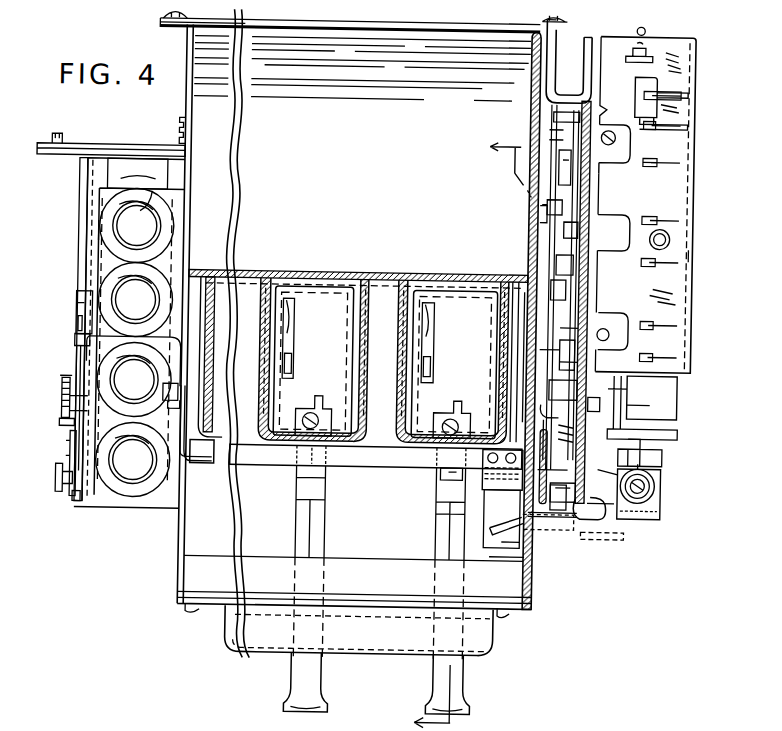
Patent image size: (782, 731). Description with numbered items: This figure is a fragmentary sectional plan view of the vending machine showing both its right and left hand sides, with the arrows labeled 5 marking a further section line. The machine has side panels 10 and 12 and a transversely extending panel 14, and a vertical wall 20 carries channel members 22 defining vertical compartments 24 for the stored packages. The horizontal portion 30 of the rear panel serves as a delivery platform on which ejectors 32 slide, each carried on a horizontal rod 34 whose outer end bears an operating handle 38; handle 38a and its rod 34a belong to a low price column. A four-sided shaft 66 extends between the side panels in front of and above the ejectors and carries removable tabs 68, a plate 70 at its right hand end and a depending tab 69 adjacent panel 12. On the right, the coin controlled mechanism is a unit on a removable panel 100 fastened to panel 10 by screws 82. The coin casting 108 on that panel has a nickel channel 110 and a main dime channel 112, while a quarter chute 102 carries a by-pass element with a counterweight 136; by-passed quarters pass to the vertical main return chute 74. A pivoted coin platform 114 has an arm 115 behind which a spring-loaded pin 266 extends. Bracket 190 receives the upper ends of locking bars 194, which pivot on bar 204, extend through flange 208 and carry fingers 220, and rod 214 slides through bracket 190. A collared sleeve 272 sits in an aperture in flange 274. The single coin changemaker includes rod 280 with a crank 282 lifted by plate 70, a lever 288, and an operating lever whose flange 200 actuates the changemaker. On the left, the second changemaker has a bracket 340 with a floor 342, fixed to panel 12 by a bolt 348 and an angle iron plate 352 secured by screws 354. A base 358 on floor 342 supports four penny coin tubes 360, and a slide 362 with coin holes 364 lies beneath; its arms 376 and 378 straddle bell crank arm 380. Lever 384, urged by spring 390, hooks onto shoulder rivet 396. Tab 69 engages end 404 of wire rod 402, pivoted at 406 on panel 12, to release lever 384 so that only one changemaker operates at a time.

The section line 5- 5 is at (457, 722).
The side panel 10 is at (525, 93).
The side panel 12 is at (209, 121).
The transversely extending panel 14 is at (355, 31).
The vertical wall 20 is at (409, 274).
The channel members 22 is at (367, 312).
The vertical compartments 24 is at (311, 312).
The horizontal portion 30 is at (519, 303).
The ejectors 32 is at (327, 311).
The horizontal rod 34 is at (443, 530).
The rod 34a is at (300, 532).
The operating handle 38 is at (468, 685).
The operating handle 38a is at (298, 676).
The four-sided shaft 66 is at (358, 457).
The removable tabs 68 is at (443, 477).
The depending tab 69 is at (202, 451).
The plate 70 is at (516, 531).
The main return chute 74 is at (551, 88).
The screws 82 is at (544, 17).
The removable panel 100 is at (563, 318).
The quarter coin chute 102 is at (579, 188).
The coin casting 108 is at (687, 252).
The nickel channel 110 is at (591, 400).
The main dime channel 112 is at (600, 361).
The pivoted coin platform 114 is at (600, 330).
The arm 115 is at (558, 467).
The counterweight 136 is at (538, 211).
The bracket 190 is at (677, 276).
The locking bars 194 is at (639, 397).
The flange 200 is at (639, 88).
The bar 204 is at (664, 452).
The flange 208 is at (671, 392).
The rod 214 is at (666, 238).
The finger 220 is at (648, 216).
The pin 266 is at (559, 505).
The collared sleeve 272 is at (655, 489).
The flange 274 is at (663, 503).
The rod 280 is at (599, 510).
The crank 282 is at (528, 504).
The lever 288 is at (641, 47).
The bracket 340 is at (88, 194).
The floor 342 is at (89, 176).
The bolt 348 is at (75, 505).
The angle iron plate 352 is at (84, 152).
The screws 354 is at (177, 138).
The base 358 is at (180, 234).
The penny coin tubes 360 is at (159, 298).
The slide 362 is at (140, 167).
The coin holes 364 is at (149, 190).
The arm 376 is at (77, 306).
The arm 378 is at (76, 344).
The bell crank arm 380 is at (78, 325).
The lever 384 is at (72, 459).
The spring 390 is at (62, 402).
The shoulder rivet 396 is at (59, 492).
The wire rod 402 is at (79, 355).
The end 404 is at (195, 475).
The pivot 406 is at (179, 398).